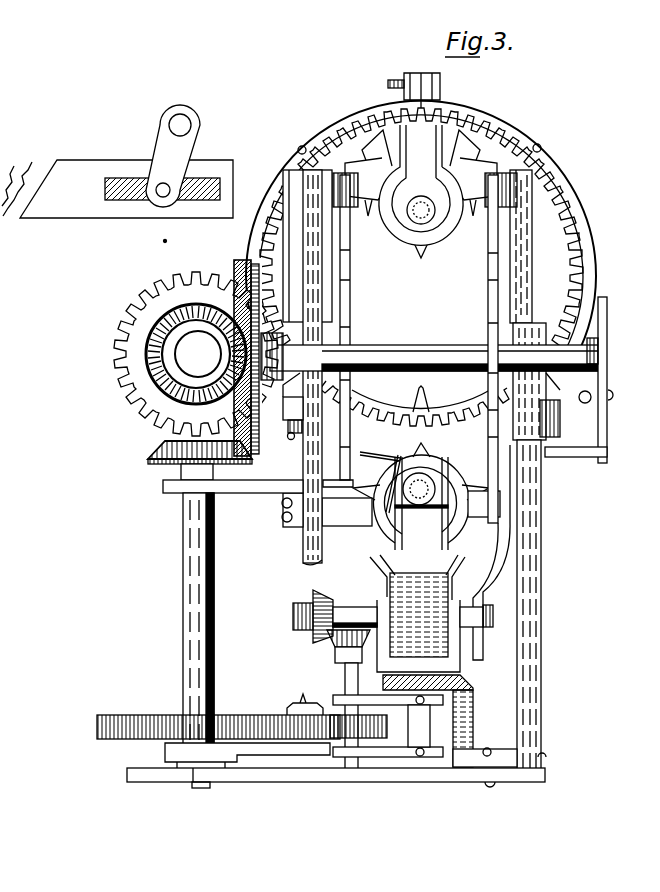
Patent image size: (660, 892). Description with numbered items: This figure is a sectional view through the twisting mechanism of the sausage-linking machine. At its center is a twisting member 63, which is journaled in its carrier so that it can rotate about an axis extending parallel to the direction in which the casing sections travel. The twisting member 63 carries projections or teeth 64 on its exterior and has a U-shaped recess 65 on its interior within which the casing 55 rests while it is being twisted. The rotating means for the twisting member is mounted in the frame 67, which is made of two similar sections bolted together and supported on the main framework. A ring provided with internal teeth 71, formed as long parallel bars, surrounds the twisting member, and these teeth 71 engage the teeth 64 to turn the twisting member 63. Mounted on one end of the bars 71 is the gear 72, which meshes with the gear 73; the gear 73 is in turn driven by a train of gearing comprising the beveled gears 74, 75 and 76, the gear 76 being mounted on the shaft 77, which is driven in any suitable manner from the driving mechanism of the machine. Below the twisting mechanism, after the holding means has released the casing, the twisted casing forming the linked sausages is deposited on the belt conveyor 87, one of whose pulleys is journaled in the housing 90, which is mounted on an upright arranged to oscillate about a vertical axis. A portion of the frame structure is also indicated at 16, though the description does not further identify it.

The broken-away frame portion 16 is at (20, 228).
The casing section 55 is at (436, 258).
The twisting member 63 is at (450, 222).
The teeth 64 is at (419, 223).
The U-shaped recess 65 is at (417, 162).
The frame 67 is at (505, 115).
The internal teeth 71 is at (275, 210).
The gear 72 is at (250, 233).
The gear 73 is at (153, 293).
The beveled gear 74 is at (155, 385).
The beveled gear 75 is at (240, 283).
The beveled gear 76 is at (165, 447).
The shaft 77 is at (198, 593).
The belt conveyor 87 is at (440, 613).
The housing 90 is at (465, 580).